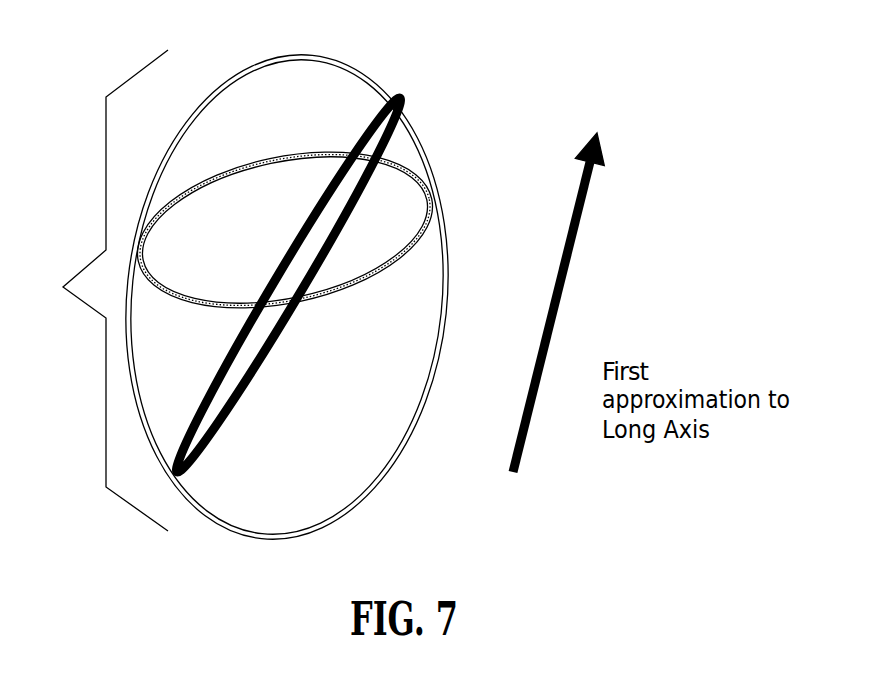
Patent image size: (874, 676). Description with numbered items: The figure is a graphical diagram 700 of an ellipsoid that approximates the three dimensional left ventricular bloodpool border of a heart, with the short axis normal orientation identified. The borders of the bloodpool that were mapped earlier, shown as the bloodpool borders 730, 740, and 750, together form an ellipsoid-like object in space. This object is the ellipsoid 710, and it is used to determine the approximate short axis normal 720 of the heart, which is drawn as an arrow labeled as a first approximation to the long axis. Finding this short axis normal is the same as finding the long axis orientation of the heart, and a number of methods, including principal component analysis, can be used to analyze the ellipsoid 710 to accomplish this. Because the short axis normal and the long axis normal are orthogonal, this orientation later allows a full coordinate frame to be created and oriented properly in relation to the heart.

The graphical diagram of ellipsoid approximating LV bloodpool border 700 is at (507, 78).
The ellipsoid 710 is at (96, 290).
The approximate short axis normal 720 is at (588, 190).
The bloodpool border 730 is at (370, 495).
The bloodpool border 740 is at (232, 407).
The bloodpool border 750 is at (374, 270).